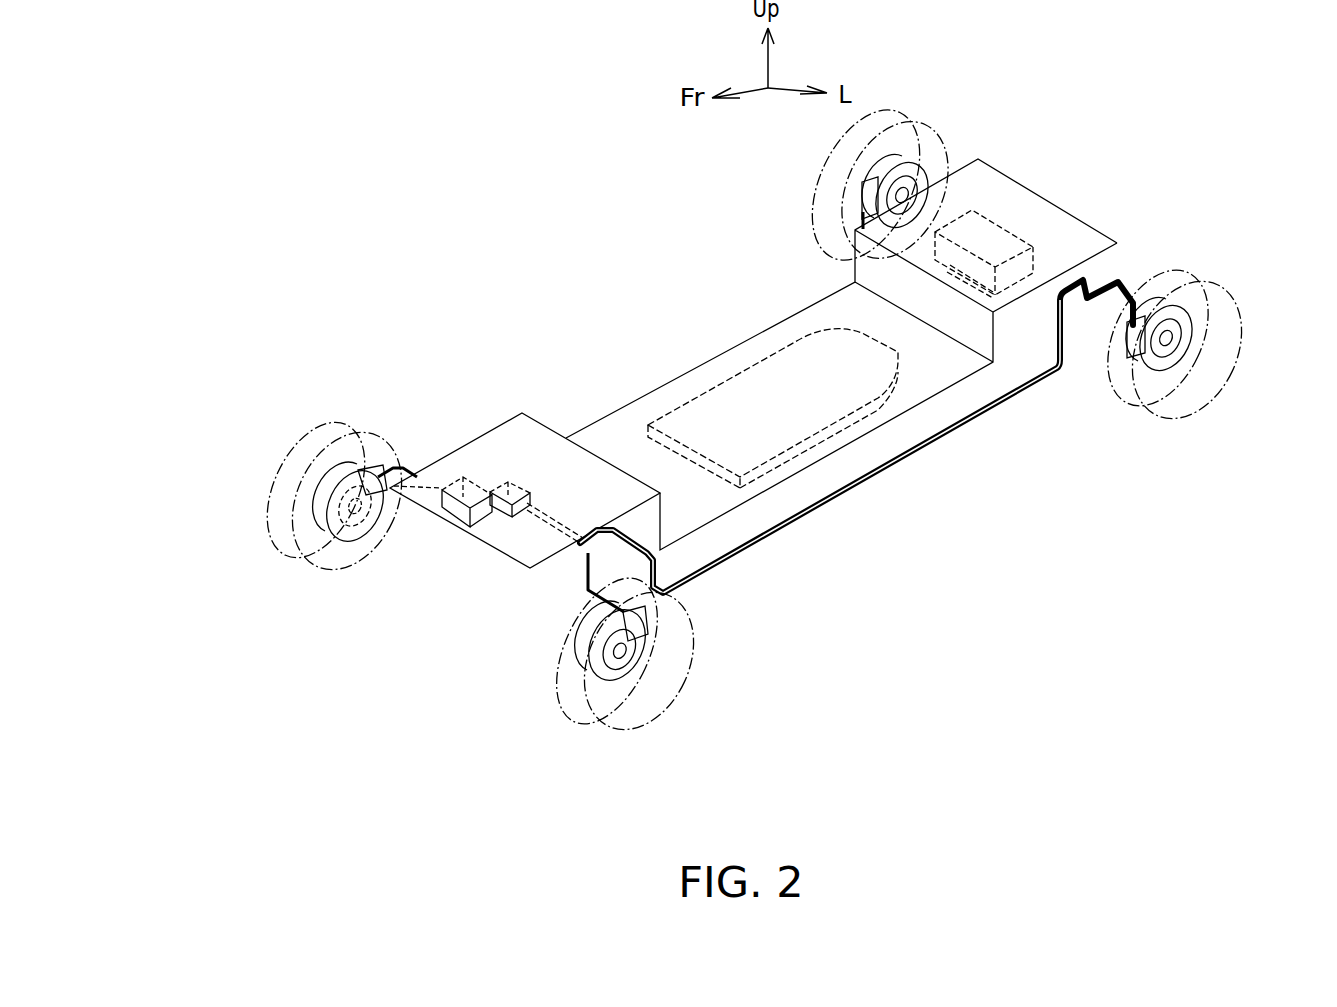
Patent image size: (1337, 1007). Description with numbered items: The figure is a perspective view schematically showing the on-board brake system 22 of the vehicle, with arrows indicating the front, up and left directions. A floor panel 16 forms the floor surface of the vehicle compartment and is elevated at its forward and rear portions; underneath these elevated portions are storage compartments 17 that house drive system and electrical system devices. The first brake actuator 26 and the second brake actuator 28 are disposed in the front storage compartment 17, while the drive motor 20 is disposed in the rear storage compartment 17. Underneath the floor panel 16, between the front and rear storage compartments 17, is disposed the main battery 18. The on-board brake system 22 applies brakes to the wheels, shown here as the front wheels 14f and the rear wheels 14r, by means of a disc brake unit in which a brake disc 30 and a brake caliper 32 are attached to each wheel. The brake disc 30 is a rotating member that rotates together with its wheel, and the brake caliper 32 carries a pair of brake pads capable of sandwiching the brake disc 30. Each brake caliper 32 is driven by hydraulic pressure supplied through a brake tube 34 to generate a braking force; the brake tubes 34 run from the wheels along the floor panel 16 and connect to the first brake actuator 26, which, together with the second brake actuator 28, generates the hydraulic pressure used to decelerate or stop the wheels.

The on-board brake system 22 is at (597, 124).
The front wheel 14f is at (272, 535).
The rear wheel 14r is at (905, 118).
The floor panel 16 is at (612, 433).
The storage compartment 17 is at (507, 575).
The main battery 18 is at (747, 393).
The drive motor 20 is at (1000, 224).
The first brake actuator 26 is at (505, 487).
The second brake actuator 28 is at (462, 490).
The brake disc 30 is at (921, 177).
The brake caliper 32 is at (863, 198).
The brake tube 34 is at (393, 473).